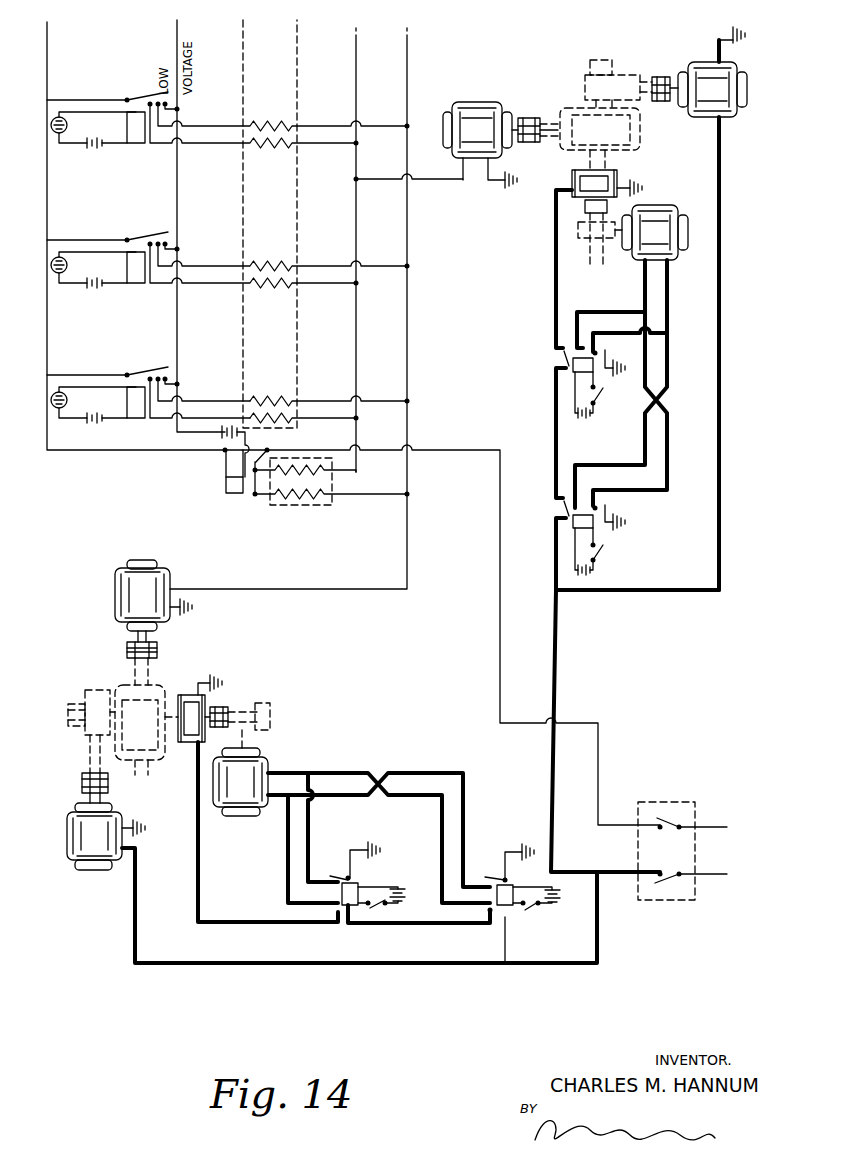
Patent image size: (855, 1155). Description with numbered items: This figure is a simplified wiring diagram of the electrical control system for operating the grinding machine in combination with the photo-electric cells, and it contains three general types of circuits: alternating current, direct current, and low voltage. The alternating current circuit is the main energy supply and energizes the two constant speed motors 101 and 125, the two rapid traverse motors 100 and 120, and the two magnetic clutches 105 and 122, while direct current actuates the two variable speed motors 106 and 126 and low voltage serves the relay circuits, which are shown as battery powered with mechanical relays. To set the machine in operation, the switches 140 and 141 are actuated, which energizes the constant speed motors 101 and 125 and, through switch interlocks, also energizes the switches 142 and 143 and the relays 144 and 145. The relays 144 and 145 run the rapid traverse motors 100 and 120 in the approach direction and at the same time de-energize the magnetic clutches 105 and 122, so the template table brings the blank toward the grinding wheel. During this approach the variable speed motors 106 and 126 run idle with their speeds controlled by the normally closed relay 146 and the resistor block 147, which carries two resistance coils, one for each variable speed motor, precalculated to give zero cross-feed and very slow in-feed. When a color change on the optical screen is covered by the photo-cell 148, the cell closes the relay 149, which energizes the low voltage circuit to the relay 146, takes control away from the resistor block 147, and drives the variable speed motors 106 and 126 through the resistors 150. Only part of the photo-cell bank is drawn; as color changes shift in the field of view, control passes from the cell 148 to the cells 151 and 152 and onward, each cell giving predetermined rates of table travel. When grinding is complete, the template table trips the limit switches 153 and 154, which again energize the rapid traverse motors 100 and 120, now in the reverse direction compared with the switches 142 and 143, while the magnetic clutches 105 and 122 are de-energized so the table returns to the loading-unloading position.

The rapid traverse motor 100 is at (243, 800).
The constant speed motor 101 is at (77, 848).
The magnetic clutch 105 is at (205, 700).
The variable speed motor 106 is at (120, 602).
The rapid traverse motor 120 is at (668, 235).
The magnetic clutch 122 is at (618, 176).
The constant speed motor 125 is at (718, 120).
The variable speed motor 126 is at (475, 105).
The switch 140 is at (672, 822).
The switch 141 is at (668, 880).
The switch 142 is at (535, 912).
The switch 143 is at (598, 550).
The relay 144 is at (483, 908).
The relay 145 is at (595, 500).
The normally closed relay 146 is at (232, 485).
The resistor block 147 is at (300, 505).
The photo-cell 148 is at (63, 410).
The relay 149 is at (134, 420).
The resistors 150 is at (272, 397).
The photo-cell 151 is at (66, 262).
The photo-cell 152 is at (66, 122).
The limit switch 153 is at (340, 920).
The limit switch 154 is at (598, 396).